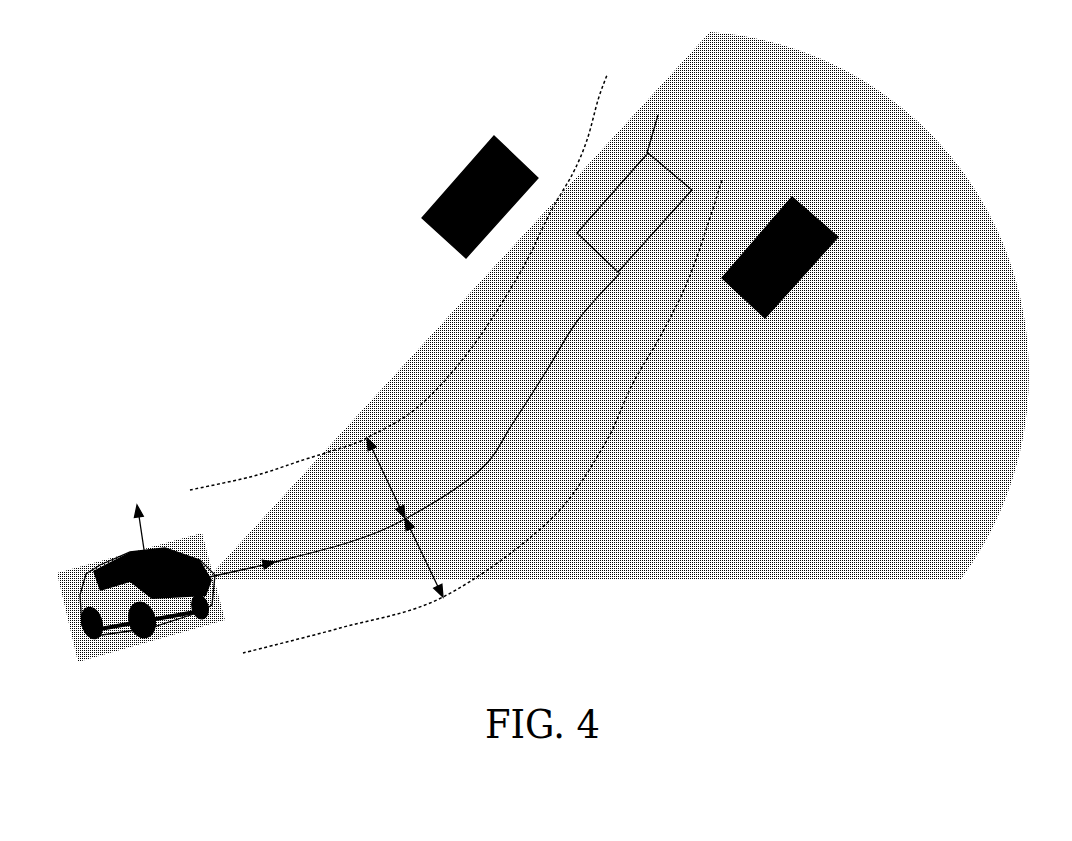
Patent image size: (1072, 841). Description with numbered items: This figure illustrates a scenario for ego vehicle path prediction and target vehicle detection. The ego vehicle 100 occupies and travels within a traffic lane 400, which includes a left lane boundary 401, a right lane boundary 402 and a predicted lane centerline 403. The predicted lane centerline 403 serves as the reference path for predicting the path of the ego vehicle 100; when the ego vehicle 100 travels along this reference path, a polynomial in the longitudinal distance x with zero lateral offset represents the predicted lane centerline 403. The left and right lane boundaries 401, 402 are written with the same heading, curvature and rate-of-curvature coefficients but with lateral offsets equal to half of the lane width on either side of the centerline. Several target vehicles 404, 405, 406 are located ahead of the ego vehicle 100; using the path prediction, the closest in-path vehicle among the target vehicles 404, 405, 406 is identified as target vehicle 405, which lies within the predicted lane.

The ego vehicle 100 is at (156, 640).
The traffic lane 400 is at (340, 530).
The left lane boundary 401 is at (418, 407).
The right lane boundary 402 is at (548, 522).
The predicted lane centerline 403 is at (478, 468).
The target vehicle 404 is at (458, 177).
The target vehicle 405 is at (697, 157).
The target vehicle 406 is at (800, 277).